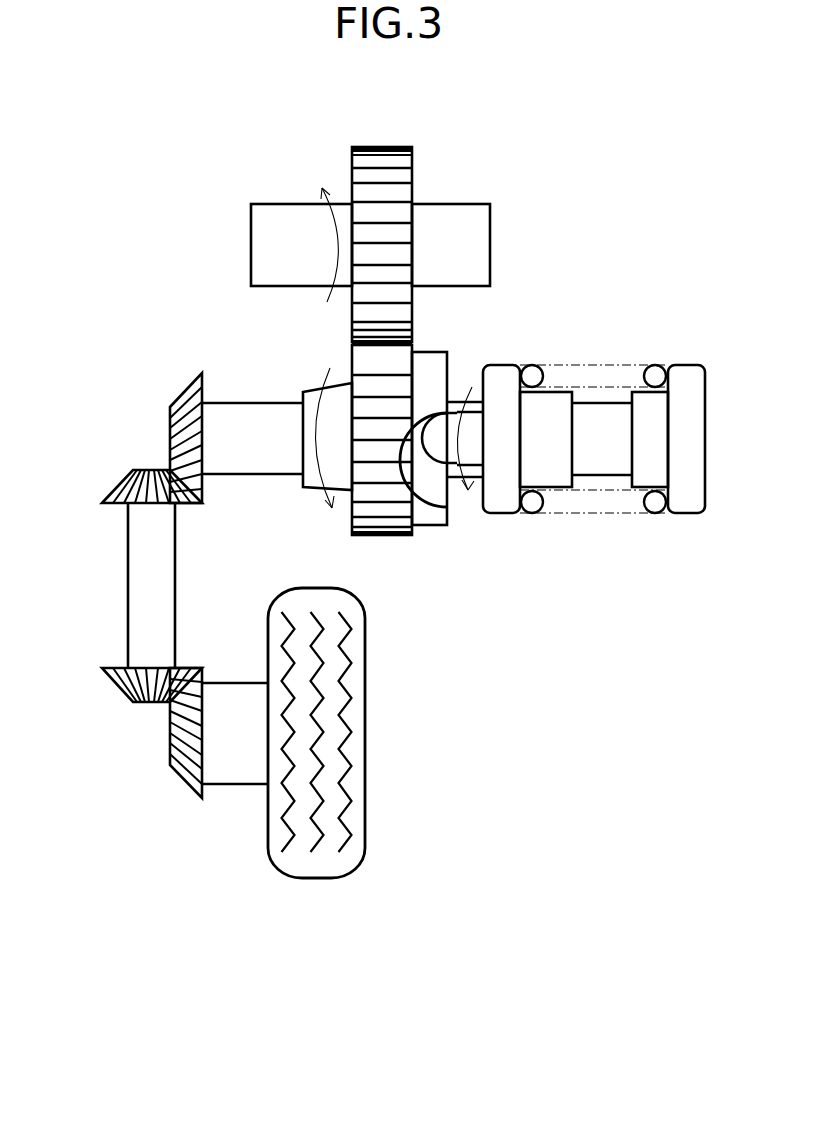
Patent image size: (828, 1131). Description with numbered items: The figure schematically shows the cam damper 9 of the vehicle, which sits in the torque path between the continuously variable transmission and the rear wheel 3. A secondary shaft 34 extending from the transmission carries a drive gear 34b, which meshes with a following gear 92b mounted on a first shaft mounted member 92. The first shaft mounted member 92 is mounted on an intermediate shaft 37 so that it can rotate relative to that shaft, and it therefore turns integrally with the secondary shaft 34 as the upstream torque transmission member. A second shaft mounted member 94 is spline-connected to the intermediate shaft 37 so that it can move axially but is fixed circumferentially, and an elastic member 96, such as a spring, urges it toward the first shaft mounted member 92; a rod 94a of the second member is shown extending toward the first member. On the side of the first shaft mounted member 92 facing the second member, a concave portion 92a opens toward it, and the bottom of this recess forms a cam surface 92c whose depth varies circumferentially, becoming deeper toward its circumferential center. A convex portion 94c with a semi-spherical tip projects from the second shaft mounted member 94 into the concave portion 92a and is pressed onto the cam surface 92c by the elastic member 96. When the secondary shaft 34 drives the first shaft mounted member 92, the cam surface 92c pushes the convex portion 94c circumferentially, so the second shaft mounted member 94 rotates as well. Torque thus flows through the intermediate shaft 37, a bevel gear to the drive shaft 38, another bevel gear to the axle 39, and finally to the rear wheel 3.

The rear wheel 3 is at (315, 878).
The cam damper 9 is at (643, 297).
The secondary shaft 34 is at (268, 203).
The drive gear 34b is at (381, 147).
The intermediate shaft 37 is at (237, 401).
The drive shaft 38 is at (128, 560).
The axle 39 is at (218, 787).
The first shaft mounted member 92 is at (385, 543).
The concave portion 92a is at (442, 487).
The following gear 92b is at (352, 535).
The cam surface 92c is at (447, 502).
The second shaft mounted member 94 is at (567, 527).
The rod 94a is at (502, 364).
The convex portion 94c is at (425, 428).
The elastic member 96 is at (628, 515).